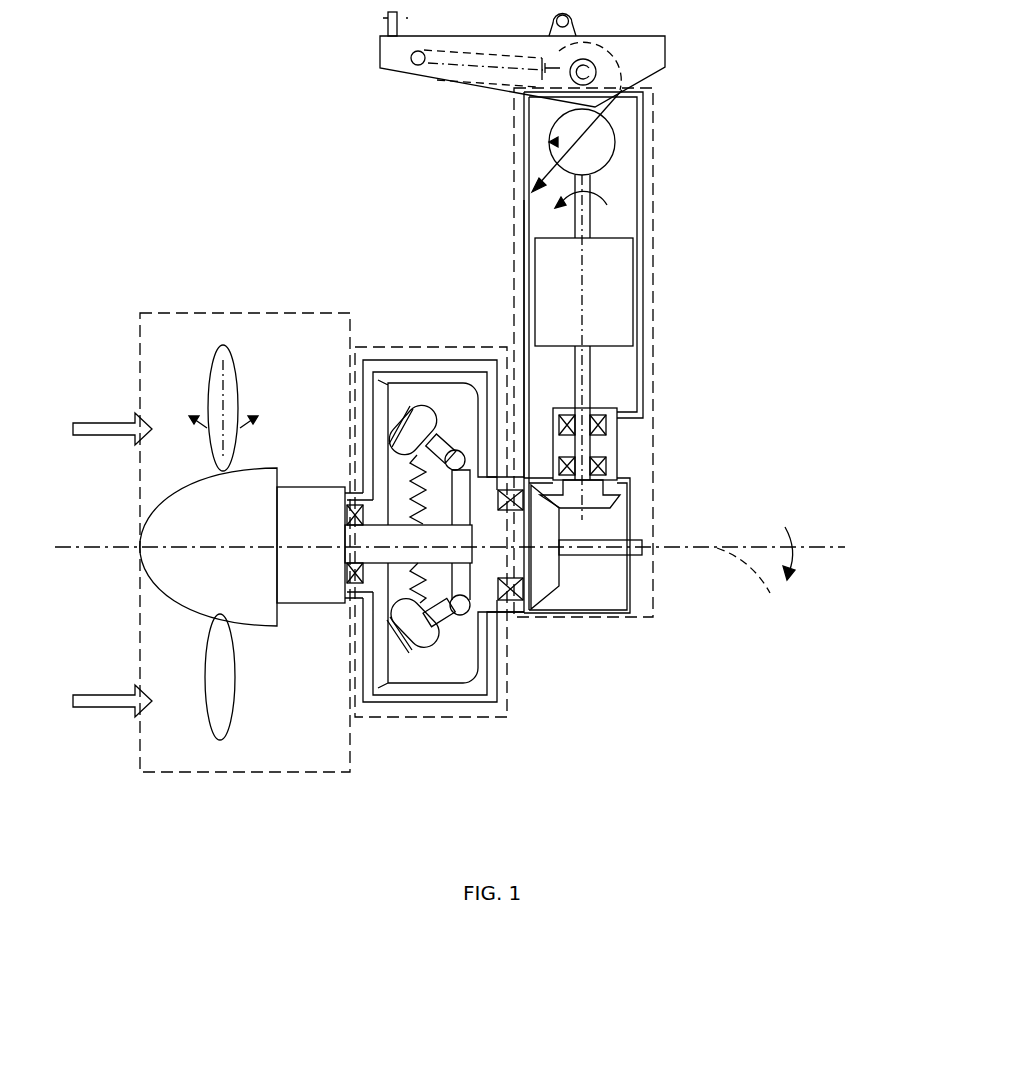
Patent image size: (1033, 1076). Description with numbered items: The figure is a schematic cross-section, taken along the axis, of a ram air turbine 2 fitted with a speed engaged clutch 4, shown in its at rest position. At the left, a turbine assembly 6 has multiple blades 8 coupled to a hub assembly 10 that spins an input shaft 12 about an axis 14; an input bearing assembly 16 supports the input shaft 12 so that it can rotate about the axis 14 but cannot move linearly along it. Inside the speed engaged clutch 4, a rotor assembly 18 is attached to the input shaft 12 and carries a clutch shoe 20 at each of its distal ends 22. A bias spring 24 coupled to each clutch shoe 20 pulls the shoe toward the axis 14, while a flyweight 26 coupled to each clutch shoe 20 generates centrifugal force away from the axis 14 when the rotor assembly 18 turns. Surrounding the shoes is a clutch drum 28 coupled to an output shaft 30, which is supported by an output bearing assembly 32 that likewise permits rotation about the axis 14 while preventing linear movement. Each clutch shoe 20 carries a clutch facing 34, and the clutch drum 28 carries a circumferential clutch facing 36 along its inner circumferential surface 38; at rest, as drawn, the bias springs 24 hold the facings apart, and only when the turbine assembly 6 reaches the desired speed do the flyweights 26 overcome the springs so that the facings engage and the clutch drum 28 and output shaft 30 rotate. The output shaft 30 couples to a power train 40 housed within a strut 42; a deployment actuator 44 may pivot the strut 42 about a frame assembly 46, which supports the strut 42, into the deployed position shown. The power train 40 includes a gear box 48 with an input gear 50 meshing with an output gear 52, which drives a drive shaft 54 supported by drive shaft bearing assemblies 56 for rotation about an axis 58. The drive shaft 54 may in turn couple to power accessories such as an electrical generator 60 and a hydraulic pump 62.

The ram air turbine 2 is at (160, 50).
The speed engaged clutch 4 is at (418, 343).
The turbine assembly 6 is at (235, 309).
The blades 8 is at (212, 358).
The hub assembly 10 is at (312, 487).
The input shaft 12 is at (421, 557).
The axis 14 is at (756, 575).
The input bearing assembly 16 is at (355, 497).
The rotor assembly 18 is at (499, 608).
The clutch shoe 20 is at (412, 652).
The distal ends 22 is at (463, 616).
The bias spring 24 is at (446, 420).
The flyweight 26 is at (433, 652).
The clutch drum 28 is at (462, 692).
The output shaft 30 is at (521, 552).
The output bearing assembly 32 is at (505, 612).
The clutch facing 34 is at (375, 715).
The circumferential clutch facing 36 is at (415, 383).
The inner circumferential surface 38 is at (448, 485).
The power train 40 is at (653, 185).
The strut 42 is at (523, 245).
The deployment actuator 44 is at (485, 76).
The frame assembly 46 is at (667, 53).
The gear box 48 is at (633, 600).
The input gear 50 is at (545, 600).
The output gear 52 is at (622, 492).
The drive shaft 54 is at (620, 437).
The drive shaft bearing assemblies 56 is at (620, 403).
The axis 58 is at (583, 316).
The electrical generator 60 is at (607, 292).
The hydraulic pump 62 is at (600, 143).